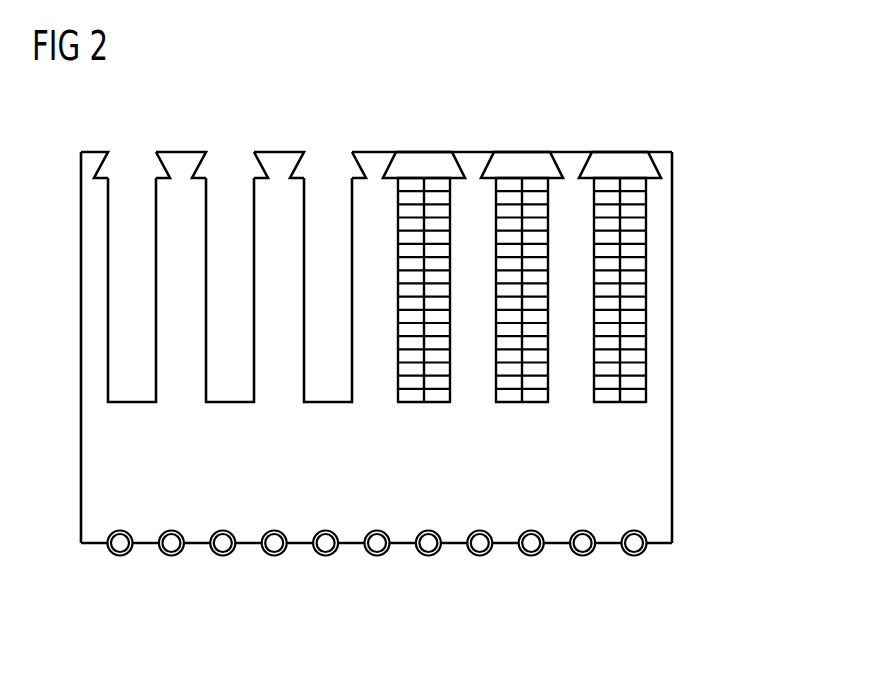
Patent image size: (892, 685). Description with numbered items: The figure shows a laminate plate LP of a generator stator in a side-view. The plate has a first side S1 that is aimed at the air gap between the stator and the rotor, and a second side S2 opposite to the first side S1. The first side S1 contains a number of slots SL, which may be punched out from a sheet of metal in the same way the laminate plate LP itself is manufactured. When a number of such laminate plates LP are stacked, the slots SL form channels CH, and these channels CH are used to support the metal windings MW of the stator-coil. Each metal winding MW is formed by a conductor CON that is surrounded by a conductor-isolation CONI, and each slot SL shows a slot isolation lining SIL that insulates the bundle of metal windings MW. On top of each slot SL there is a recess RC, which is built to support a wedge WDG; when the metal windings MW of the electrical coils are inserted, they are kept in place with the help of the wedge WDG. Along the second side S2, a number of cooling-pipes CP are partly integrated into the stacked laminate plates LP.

The laminate plate LP is at (90, 445).
The first side S1 is at (437, 134).
The second side S2 is at (137, 573).
The recess RC is at (97, 171).
The channel CH is at (228, 153).
The slot SL is at (70, 270).
The wedge WDG is at (590, 251).
The slot isolation lining SIL is at (645, 223).
The metal winding MW is at (597, 290).
The conductor CON is at (638, 342).
The conductor-isolation CONI is at (648, 333).
The cooling-pipe CP is at (325, 548).